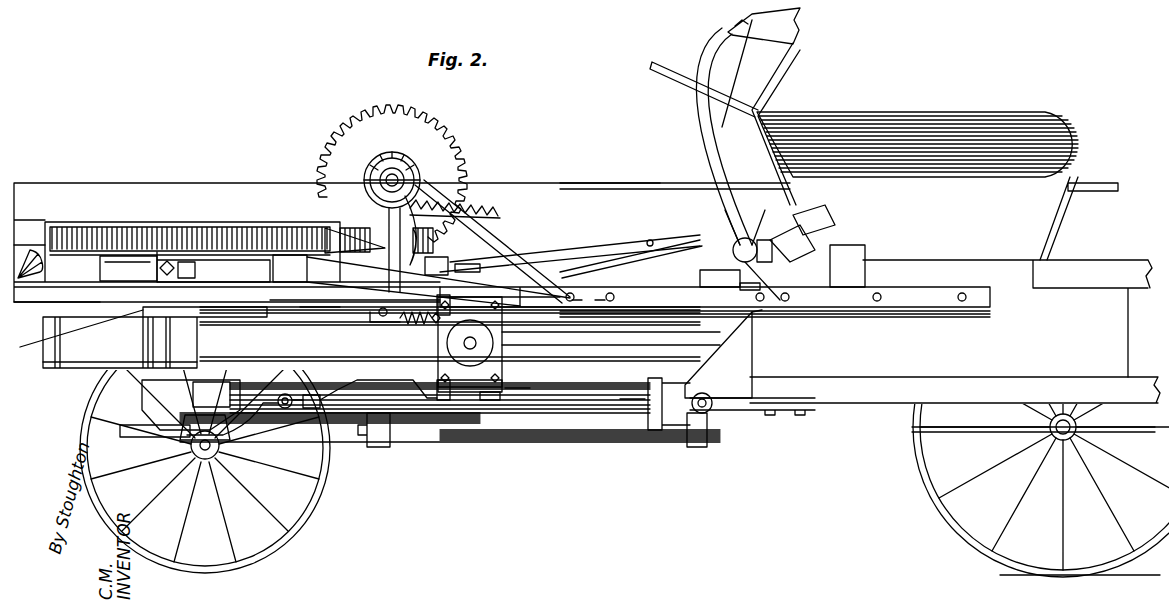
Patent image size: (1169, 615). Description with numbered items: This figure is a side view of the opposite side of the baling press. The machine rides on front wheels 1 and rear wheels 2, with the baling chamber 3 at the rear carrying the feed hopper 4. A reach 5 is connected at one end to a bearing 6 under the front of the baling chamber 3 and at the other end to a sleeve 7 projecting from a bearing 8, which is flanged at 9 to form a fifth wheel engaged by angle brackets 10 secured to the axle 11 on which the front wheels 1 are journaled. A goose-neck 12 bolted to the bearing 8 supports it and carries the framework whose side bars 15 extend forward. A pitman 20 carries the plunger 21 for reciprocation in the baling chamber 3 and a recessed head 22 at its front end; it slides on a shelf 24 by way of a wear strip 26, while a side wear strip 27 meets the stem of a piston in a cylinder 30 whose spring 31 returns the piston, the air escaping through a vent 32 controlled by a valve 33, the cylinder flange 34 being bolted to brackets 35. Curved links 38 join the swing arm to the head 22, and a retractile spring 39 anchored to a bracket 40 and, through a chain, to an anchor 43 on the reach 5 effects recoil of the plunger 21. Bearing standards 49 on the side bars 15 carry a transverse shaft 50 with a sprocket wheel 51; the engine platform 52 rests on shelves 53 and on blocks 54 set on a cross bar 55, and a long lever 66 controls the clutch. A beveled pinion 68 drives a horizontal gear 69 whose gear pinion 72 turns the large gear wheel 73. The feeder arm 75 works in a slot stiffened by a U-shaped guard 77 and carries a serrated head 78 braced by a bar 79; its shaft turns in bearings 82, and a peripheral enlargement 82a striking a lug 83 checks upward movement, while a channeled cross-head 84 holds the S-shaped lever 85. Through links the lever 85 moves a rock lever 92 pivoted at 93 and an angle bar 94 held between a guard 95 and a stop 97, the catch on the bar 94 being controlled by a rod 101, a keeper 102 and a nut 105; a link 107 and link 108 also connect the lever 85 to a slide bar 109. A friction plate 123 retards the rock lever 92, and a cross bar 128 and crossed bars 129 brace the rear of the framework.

The front wheels 1 is at (186, 448).
The rear wheels 2 is at (946, 528).
The baling chamber 3 is at (955, 375).
The feed hopper 4 is at (973, 100).
The reach 5 is at (578, 412).
The bearing 6 is at (815, 410).
The sleeve 7 is at (357, 425).
The bearing 8 is at (211, 394).
The flange 9 is at (120, 426).
The angle brackets 10 is at (195, 430).
The axle 11 is at (185, 450).
The goose-neck 12 is at (150, 395).
The side bars 15 is at (30, 302).
The pitman 20 is at (632, 400).
The plunger or head-block 21 is at (718, 355).
The head 22 is at (155, 337).
The shelf 24 is at (355, 373).
The wear strip 26 is at (515, 393).
The wear strip 27 is at (385, 440).
The cylinder 30 is at (733, 207).
The spring 31 is at (727, 200).
The air vent 32 is at (470, 370).
The valve 33 is at (470, 395).
The flange 34 is at (487, 400).
The brackets 35 is at (440, 395).
The curved links 38 is at (43, 368).
The retractile spring 39 is at (400, 318).
The bracket 40 is at (315, 318).
The anchor 43 is at (705, 420).
The bearing standards 49 is at (525, 129).
The transverse shaft 50 is at (384, 100).
The sprocket wheel 51 is at (352, 136).
The skeleton platform 52 is at (188, 188).
The shelves 53 is at (367, 222).
The blocks 54 is at (33, 218).
The cross bar 55 is at (40, 268).
The long lever 66 is at (612, 186).
The beveled pinion 68 is at (405, 165).
The gear 69 is at (447, 258).
The gear pinion 72 is at (478, 212).
The gear wheel 73 is at (100, 222).
The feeder arm 75 is at (697, 103).
The U-shaped guard 77 is at (663, 62).
The serrated feeder head 78 is at (785, 28).
The brace bar 79 is at (790, 68).
The bearings 82 is at (813, 226).
The peripheral enlargement 82a is at (762, 250).
The lug 83 is at (845, 250).
The channeled cross-head 84 is at (800, 222).
The S-shaped lever 85 is at (812, 250).
The rock lever 92 is at (577, 300).
The pivot 93 is at (600, 300).
The angle bar 94 is at (352, 275).
The guard 95 is at (293, 273).
The stop 97 is at (113, 262).
The rod 101 is at (165, 266).
The keeper 102 is at (200, 266).
The nut 105 is at (184, 266).
The link 107 is at (675, 234).
The link 108 is at (590, 257).
The slide bar 109 is at (470, 250).
The friction plate 123 is at (678, 420).
The cross bar 128 is at (745, 290).
The crossed bars 129 is at (752, 318).